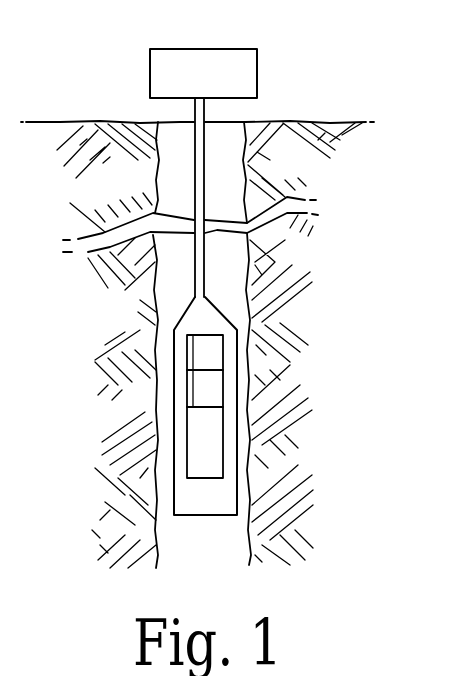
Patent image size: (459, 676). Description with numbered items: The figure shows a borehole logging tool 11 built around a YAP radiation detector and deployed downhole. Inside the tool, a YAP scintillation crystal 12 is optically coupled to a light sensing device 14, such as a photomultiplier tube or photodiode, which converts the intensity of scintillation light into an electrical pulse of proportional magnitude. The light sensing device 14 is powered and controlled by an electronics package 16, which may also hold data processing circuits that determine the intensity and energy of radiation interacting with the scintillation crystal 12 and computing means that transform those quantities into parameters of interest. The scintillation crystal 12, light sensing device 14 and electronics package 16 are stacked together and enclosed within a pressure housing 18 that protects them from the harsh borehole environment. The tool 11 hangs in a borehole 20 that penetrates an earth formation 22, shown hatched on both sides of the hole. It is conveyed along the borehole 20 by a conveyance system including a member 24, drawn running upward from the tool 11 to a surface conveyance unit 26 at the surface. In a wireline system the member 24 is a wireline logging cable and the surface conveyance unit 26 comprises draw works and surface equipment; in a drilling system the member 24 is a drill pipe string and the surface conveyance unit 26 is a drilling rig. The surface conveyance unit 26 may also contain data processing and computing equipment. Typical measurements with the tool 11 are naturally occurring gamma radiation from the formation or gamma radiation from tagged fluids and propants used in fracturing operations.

The logging tool 11 is at (204, 435).
The YAP scintillation crystal 12 is at (222, 460).
The light sensing device 14 is at (220, 390).
The electronics package 16 is at (220, 353).
The pressure housing 18 is at (172, 393).
The borehole 20 is at (224, 272).
The earth formation 22 is at (273, 177).
The member 24 is at (195, 162).
The surface conveyance unit 26 is at (257, 77).